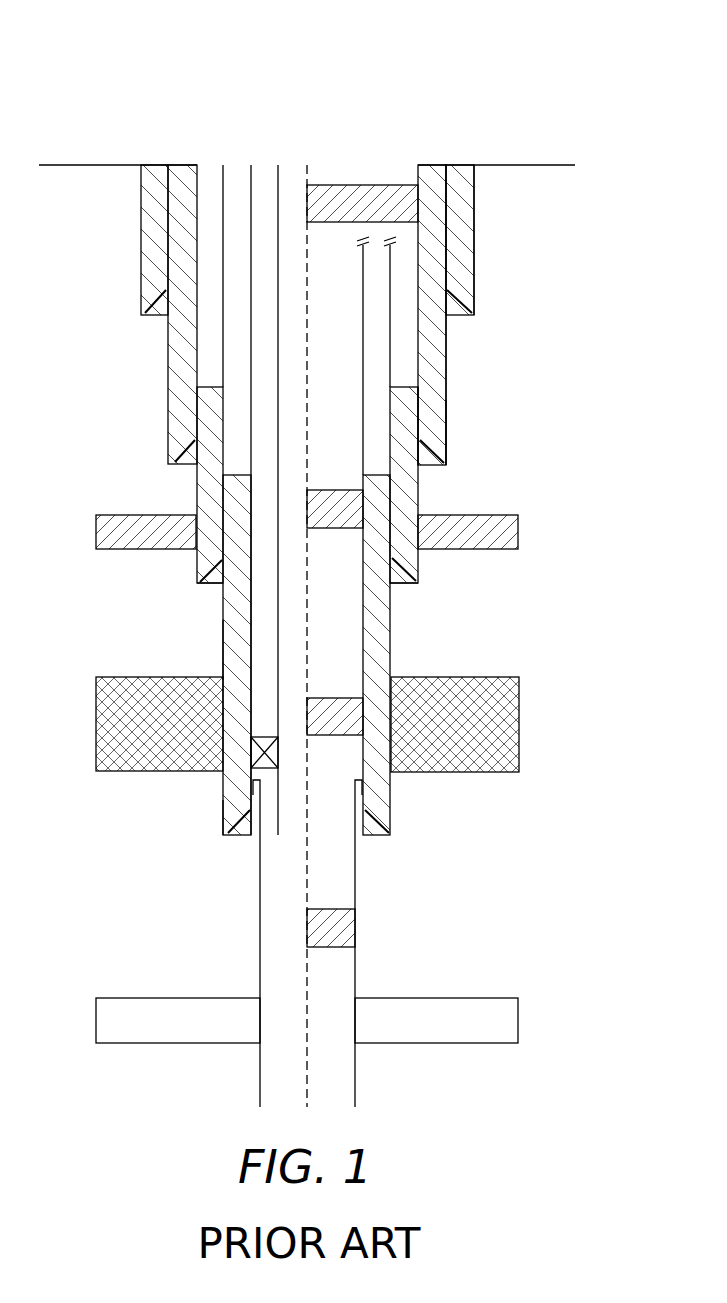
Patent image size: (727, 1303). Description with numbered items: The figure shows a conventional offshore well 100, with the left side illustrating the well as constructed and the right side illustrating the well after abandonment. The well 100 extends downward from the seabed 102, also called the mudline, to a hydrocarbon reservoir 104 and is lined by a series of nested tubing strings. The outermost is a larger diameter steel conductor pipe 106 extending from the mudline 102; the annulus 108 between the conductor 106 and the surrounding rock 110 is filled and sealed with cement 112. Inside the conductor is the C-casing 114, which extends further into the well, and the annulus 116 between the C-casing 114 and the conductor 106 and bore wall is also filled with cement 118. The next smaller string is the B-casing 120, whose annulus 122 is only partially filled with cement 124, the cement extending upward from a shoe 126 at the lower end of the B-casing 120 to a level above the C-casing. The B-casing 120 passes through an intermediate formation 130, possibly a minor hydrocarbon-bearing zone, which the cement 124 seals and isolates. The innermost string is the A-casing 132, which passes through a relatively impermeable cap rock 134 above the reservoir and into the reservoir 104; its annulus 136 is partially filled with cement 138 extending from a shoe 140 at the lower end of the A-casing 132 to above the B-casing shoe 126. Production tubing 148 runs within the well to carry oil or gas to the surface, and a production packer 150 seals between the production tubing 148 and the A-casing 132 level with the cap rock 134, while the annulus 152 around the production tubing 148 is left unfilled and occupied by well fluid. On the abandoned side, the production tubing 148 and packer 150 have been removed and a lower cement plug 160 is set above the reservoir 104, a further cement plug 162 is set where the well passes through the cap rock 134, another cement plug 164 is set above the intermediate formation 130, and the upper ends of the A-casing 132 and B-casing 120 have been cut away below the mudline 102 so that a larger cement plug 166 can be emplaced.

The well 100 is at (160, 62).
The seabed 102 is at (65, 165).
The hydrocarbon reservoir 104 is at (518, 1018).
The conductor pipe 106 is at (446, 262).
The annulus 108 is at (458, 165).
The surrounding rock 110 is at (52, 356).
The cement 112 is at (474, 182).
The casing 114 is at (418, 337).
The annulus 116 is at (436, 375).
The cement 118 is at (446, 412).
The casing 120 is at (393, 543).
The annulus 122 is at (410, 485).
The cement 124 is at (420, 575).
The shoe 126 is at (223, 567).
The intermediate formation 130 is at (518, 530).
The casing 132 is at (251, 607).
The cap rock 134 is at (96, 722).
The annulus 136 is at (233, 813).
The cement 138 is at (233, 650).
The shoe 140 is at (245, 838).
The production tubing 148 is at (278, 255).
The production packer 150 is at (258, 757).
The annulus 152 is at (263, 420).
The lower cement plug 160 is at (357, 925).
The cement plug 162 is at (333, 698).
The cement plug 164 is at (333, 490).
The cement plug 166 is at (360, 185).